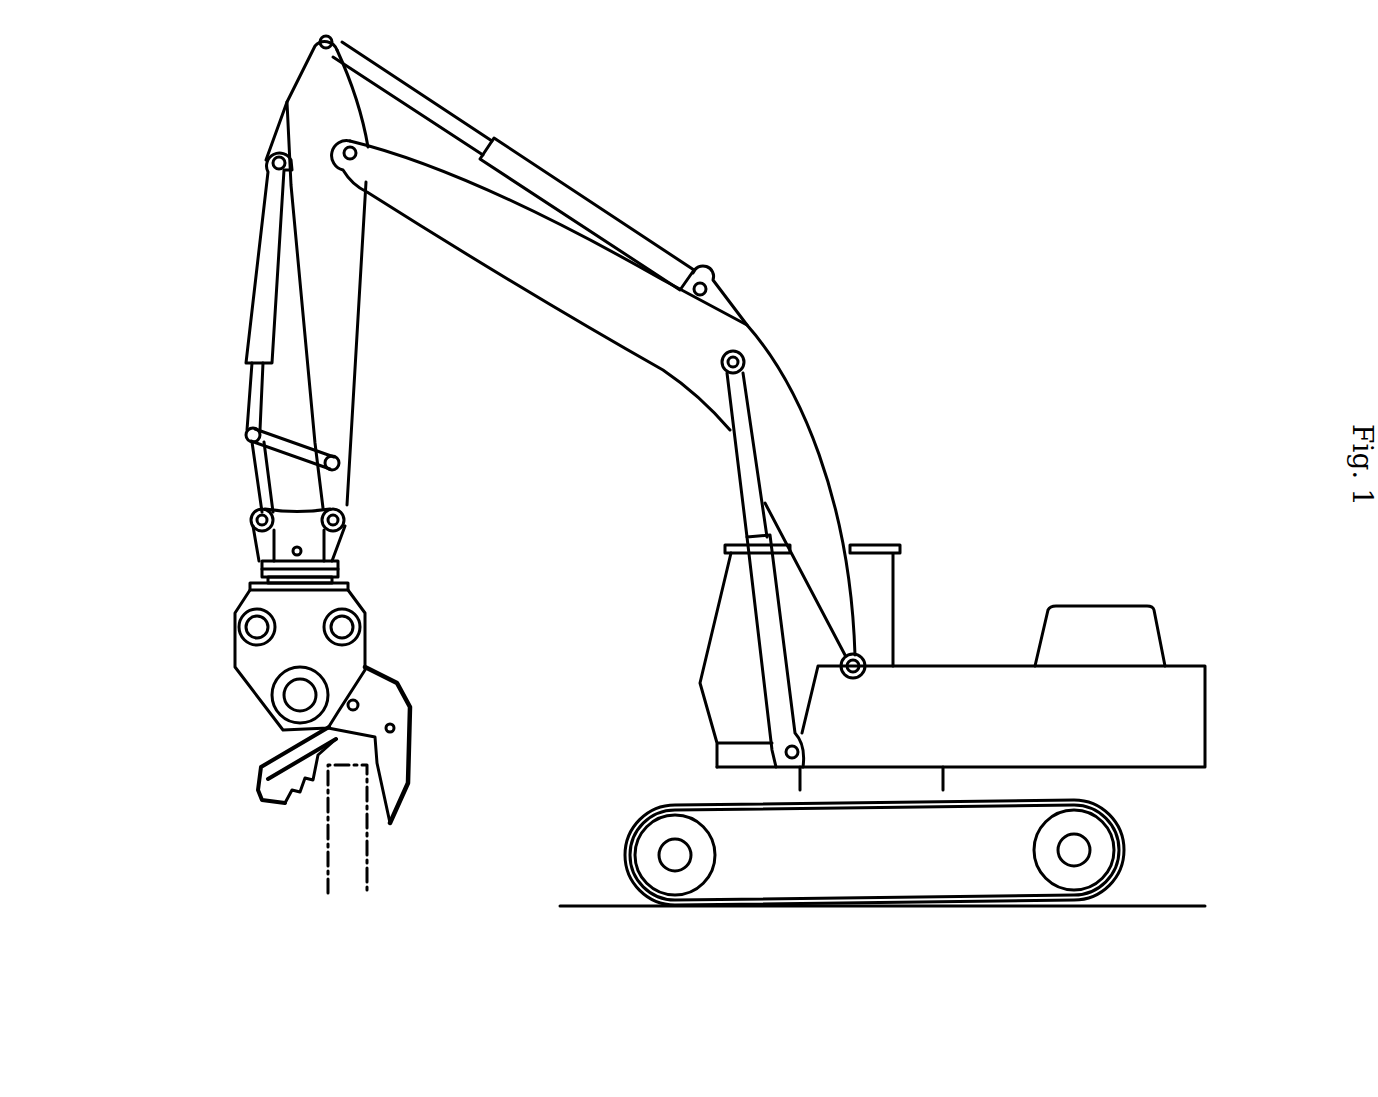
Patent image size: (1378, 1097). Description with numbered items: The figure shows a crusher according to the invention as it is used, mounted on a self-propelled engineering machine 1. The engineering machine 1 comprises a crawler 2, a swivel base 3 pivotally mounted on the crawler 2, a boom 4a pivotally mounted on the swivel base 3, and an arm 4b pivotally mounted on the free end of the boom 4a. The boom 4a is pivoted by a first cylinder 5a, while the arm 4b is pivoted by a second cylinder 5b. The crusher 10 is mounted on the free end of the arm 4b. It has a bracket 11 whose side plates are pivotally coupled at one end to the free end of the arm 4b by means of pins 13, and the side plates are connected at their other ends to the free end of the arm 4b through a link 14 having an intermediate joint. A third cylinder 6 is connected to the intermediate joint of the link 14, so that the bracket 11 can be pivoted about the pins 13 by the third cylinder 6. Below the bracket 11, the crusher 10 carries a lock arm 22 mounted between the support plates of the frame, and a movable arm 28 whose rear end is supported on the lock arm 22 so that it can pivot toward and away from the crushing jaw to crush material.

The self-propelled engineering machine 1 is at (963, 628).
The crawler 2 is at (700, 800).
The swivel base 3 is at (1190, 697).
The boom 4a is at (800, 407).
The arm 4b is at (350, 305).
The first cylinder 5a is at (765, 614).
The second cylinder 5b is at (582, 200).
The third cylinder 6 is at (263, 290).
The crusher 10 is at (222, 637).
The bracket 11 is at (262, 540).
The pins 13 is at (345, 518).
The link 14 is at (250, 462).
The lock arm 22 is at (405, 718).
The movable arm 28 is at (267, 757).